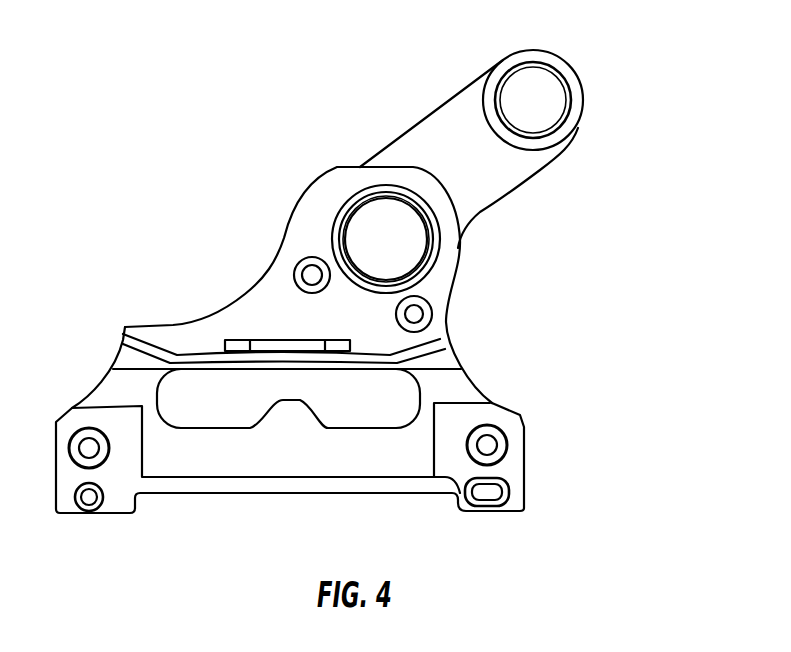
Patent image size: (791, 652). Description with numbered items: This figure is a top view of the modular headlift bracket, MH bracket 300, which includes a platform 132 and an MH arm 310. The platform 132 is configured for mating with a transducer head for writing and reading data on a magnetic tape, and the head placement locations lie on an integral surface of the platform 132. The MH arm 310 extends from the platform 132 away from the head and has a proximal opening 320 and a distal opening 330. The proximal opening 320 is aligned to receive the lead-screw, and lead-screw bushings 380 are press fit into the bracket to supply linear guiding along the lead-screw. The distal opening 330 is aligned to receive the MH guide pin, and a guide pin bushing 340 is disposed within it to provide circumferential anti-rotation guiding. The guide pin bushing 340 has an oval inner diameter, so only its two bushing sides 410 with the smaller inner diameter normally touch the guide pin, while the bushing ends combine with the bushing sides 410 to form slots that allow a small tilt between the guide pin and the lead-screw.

The MH bracket 300 is at (205, 58).
The MH arm 310 is at (265, 303).
The guide pin bushing 340 is at (549, 59).
The distal opening 330 is at (535, 110).
The bushing sides 410 is at (487, 83).
The lead-screw bushings 380 is at (438, 243).
The proximal opening 320 is at (398, 257).
The platform 132 is at (313, 463).